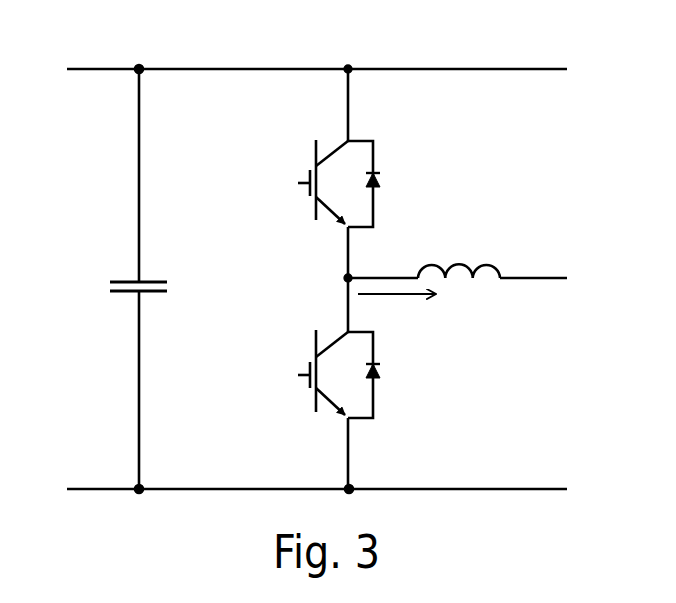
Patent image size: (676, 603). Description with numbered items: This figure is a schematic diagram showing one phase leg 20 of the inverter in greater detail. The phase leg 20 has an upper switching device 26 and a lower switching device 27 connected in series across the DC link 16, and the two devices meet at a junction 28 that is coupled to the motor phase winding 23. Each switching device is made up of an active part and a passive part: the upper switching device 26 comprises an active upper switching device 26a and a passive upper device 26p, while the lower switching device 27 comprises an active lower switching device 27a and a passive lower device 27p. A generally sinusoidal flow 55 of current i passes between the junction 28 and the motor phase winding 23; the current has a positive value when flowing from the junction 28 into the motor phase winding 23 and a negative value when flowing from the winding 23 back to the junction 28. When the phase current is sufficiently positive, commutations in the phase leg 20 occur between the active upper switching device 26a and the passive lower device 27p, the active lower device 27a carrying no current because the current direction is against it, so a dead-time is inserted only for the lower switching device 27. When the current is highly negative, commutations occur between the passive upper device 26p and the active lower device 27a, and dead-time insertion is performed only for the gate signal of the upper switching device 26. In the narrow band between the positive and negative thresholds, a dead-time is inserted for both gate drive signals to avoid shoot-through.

The DC link 16 is at (122, 280).
The phase leg 20 is at (346, 60).
The motor phase winding 23 is at (488, 265).
The upper switching device 26 is at (350, 160).
The active upper switching device 26a is at (316, 162).
The passive upper device 26p is at (378, 173).
The lower switching device 27 is at (352, 379).
The active lower switching device 27a is at (316, 352).
The passive lower device 27p is at (380, 374).
The junction 28 is at (346, 277).
The generally sinusoidal flow of current 55 is at (402, 297).